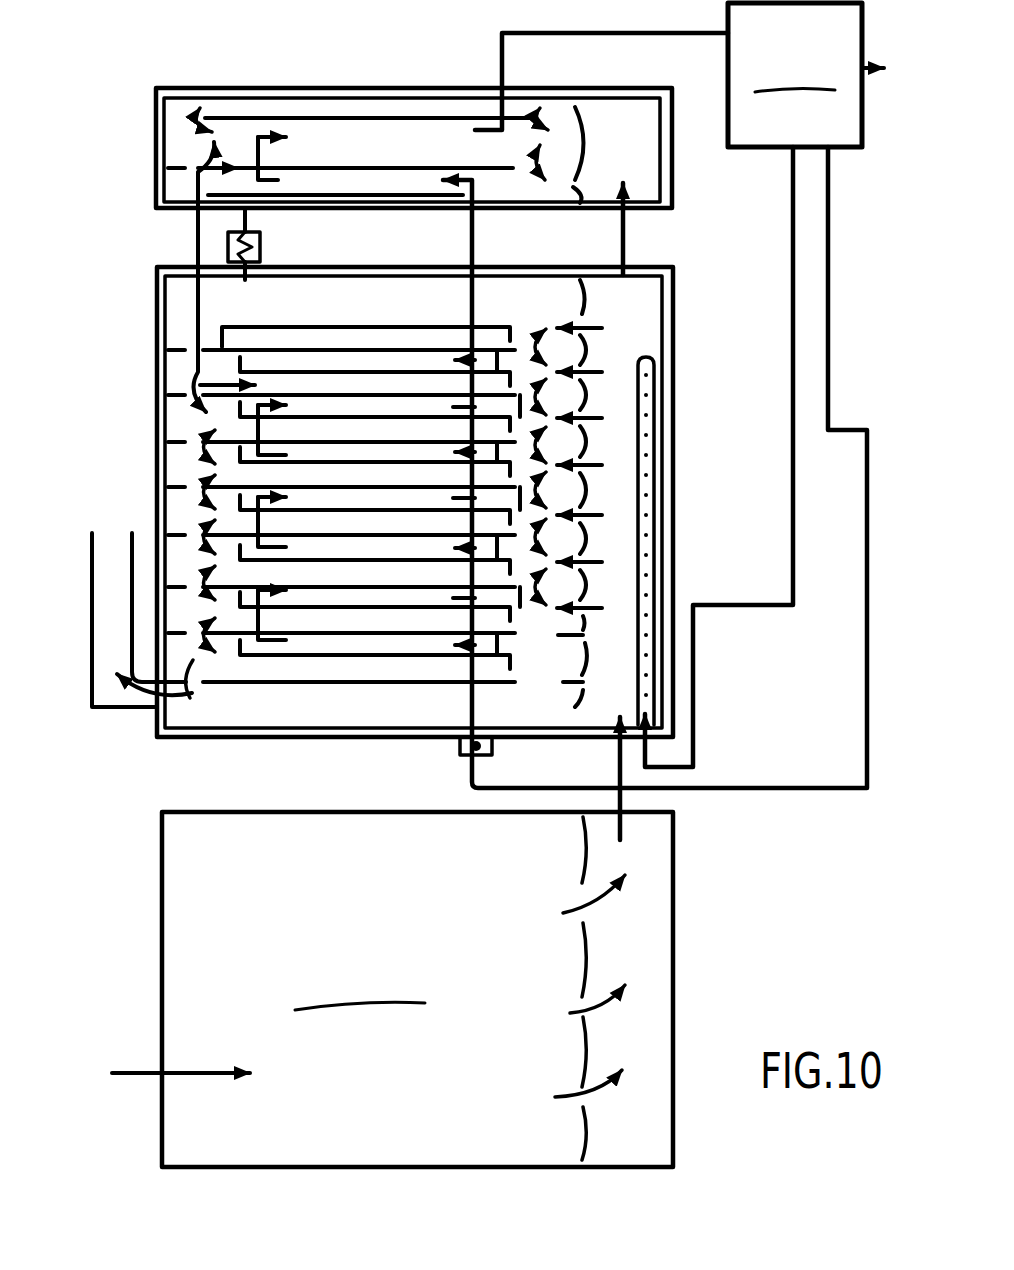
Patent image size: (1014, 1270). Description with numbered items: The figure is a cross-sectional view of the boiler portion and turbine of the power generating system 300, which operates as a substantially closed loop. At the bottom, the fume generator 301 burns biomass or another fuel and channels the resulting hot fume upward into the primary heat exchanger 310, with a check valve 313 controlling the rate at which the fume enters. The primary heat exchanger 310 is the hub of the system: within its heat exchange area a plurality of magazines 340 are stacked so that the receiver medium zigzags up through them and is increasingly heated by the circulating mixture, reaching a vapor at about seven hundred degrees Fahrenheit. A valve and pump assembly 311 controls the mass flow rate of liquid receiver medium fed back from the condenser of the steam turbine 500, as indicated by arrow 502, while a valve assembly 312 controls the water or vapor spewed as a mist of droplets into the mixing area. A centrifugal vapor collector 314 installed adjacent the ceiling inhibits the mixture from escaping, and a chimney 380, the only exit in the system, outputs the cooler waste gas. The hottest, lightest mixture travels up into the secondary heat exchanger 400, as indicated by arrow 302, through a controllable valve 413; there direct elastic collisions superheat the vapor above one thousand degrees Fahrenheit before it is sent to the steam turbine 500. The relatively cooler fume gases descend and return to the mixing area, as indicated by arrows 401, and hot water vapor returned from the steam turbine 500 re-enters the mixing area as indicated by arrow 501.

The power generating system 300 is at (86, 134).
The fume generator 301 is at (392, 989).
The arrow 302 is at (628, 230).
The primary heat exchanger 310 is at (138, 392).
The valve and pump assembly 311 is at (488, 748).
The valve assembly 312 is at (650, 745).
The check valve 313 is at (615, 738).
The centrifugal vapor collector 314 is at (265, 258).
The magazines 340 is at (204, 633).
The chimney 380 is at (108, 605).
The secondary heat exchanger 400 is at (362, 70).
The arrows 401 is at (196, 234).
The controllable valve 413 is at (617, 212).
The steam turbine 500 is at (679, 75).
The arrow 501 is at (793, 478).
The arrow 502 is at (863, 667).